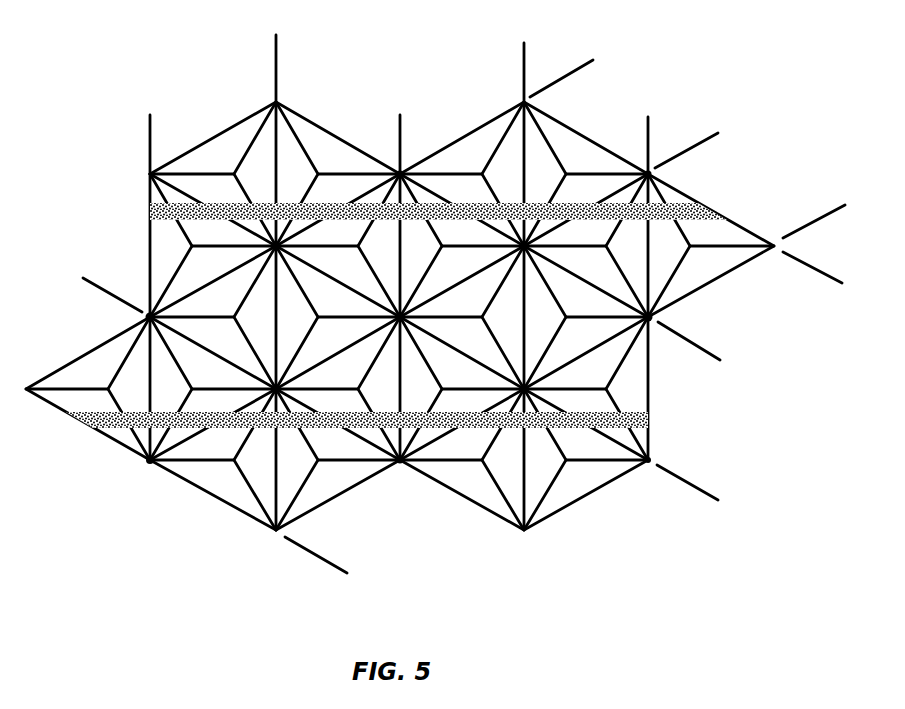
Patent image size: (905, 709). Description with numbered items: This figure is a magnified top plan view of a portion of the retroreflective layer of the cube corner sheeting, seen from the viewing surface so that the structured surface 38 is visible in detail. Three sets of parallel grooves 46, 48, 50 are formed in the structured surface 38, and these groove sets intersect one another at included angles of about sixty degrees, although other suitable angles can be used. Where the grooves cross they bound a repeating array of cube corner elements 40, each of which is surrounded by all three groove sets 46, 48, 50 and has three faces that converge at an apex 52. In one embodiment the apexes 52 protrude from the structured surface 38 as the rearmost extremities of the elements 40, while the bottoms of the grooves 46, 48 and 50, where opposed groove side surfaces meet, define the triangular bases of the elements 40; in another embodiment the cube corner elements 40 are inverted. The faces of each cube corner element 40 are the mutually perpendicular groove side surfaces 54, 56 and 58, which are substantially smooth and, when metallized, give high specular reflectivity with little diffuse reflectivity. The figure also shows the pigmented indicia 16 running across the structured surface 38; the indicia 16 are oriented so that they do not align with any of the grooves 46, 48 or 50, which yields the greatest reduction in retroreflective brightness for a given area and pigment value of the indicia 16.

The structured surface 38 is at (757, 79).
The pigmented indicia 16 is at (148, 213).
The cube corner element 40 is at (450, 476).
The groove 46 is at (573, 72).
The groove 48 is at (817, 267).
The groove 50 is at (274, 53).
The apex 52 is at (483, 464).
The groove side surface 54 is at (257, 473).
The groove side surface 56 is at (163, 468).
The groove side surface 58 is at (220, 487).